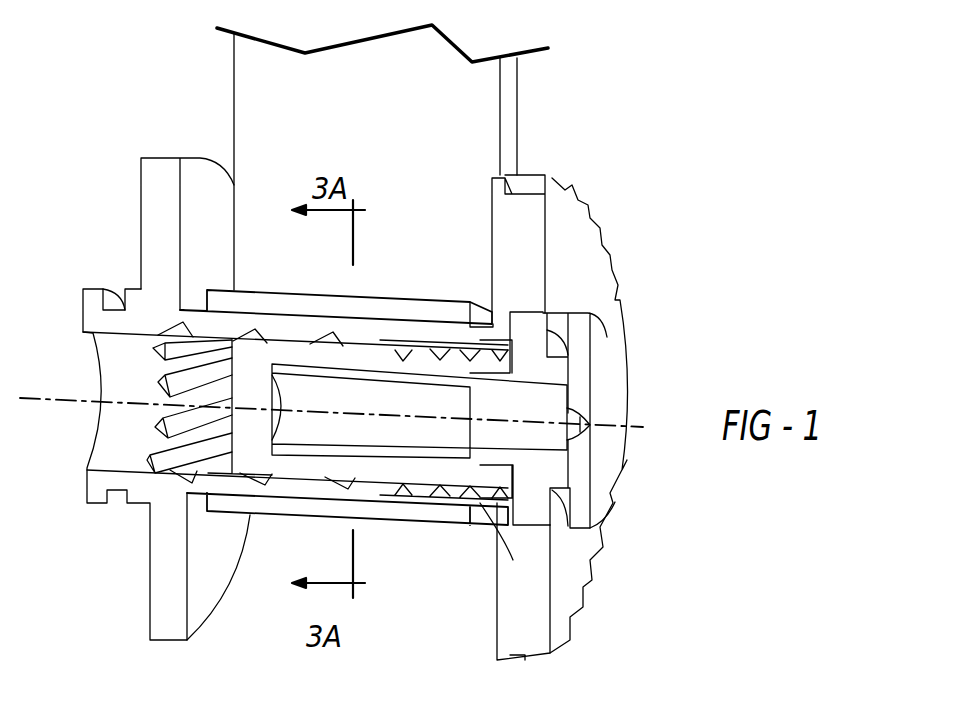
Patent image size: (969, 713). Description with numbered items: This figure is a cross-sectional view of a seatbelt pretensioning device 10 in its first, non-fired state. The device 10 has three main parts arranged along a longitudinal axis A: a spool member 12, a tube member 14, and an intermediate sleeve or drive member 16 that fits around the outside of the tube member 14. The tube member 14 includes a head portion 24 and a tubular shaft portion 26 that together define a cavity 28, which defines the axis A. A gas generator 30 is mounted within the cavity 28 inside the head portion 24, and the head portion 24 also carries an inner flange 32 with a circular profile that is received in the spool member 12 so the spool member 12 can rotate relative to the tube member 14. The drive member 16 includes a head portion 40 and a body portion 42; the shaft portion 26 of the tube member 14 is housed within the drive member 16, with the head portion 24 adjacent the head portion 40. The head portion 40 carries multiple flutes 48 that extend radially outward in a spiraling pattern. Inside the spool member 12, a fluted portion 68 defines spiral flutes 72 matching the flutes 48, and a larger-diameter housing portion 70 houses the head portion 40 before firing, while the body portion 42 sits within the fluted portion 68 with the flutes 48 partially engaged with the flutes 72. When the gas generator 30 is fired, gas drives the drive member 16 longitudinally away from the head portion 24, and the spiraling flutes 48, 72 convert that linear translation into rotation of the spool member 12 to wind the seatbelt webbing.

The seatbelt pretensioning device 10 is at (643, 137).
The spool member 12 is at (165, 173).
The tube member 14 is at (603, 380).
The drive member 16 is at (260, 460).
The head portion 24 is at (560, 363).
The tubular shaft portion 26 is at (363, 375).
The cavity 28 is at (443, 430).
The gas generator 30 is at (527, 438).
The inner flange 32 is at (525, 508).
The head portion 40 is at (487, 357).
The body portion 42 is at (382, 473).
The flutes 48 is at (455, 483).
The fluted portion 68 is at (223, 460).
The housing portion 70 is at (477, 497).
The spiral flutes 72 is at (170, 427).
The longitudinal axis A is at (640, 430).